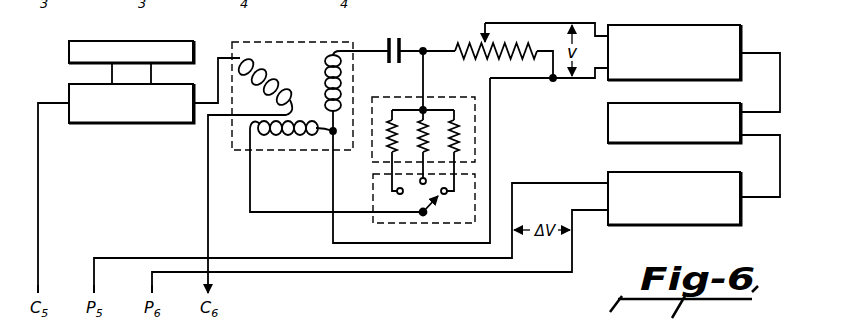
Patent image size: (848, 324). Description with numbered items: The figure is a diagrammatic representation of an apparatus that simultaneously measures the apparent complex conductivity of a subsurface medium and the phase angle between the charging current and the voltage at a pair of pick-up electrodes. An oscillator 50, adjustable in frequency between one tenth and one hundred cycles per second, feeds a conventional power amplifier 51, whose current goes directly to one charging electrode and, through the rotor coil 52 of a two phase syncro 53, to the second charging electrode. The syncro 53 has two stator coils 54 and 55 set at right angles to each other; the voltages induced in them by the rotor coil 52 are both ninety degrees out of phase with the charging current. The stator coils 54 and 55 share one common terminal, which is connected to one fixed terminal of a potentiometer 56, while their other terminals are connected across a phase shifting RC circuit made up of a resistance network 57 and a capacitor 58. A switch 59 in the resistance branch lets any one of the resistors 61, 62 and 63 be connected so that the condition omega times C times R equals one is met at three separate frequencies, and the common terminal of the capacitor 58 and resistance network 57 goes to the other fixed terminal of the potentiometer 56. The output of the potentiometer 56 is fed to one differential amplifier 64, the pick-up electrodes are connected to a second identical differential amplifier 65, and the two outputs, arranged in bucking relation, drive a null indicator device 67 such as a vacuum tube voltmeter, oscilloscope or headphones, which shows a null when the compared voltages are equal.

The oscillator 50 is at (69, 46).
The power amplifier 51 is at (69, 88).
The rotor coil 52 is at (267, 79).
The two phase syncro 53 is at (361, 142).
The stator coil 54 is at (326, 87).
The stator coil 55 is at (317, 154).
The potentiometer 56 is at (467, 42).
The resistance network 57 is at (410, 129).
The capacitor 58 is at (396, 34).
The switch 59 is at (373, 222).
The resistor 61 is at (388, 116).
The resistor 62 is at (427, 116).
The resistor 63 is at (457, 116).
The differential amplifier 64 is at (740, 26).
The differential amplifier 65 is at (608, 172).
The null indicator device 67 is at (608, 120).